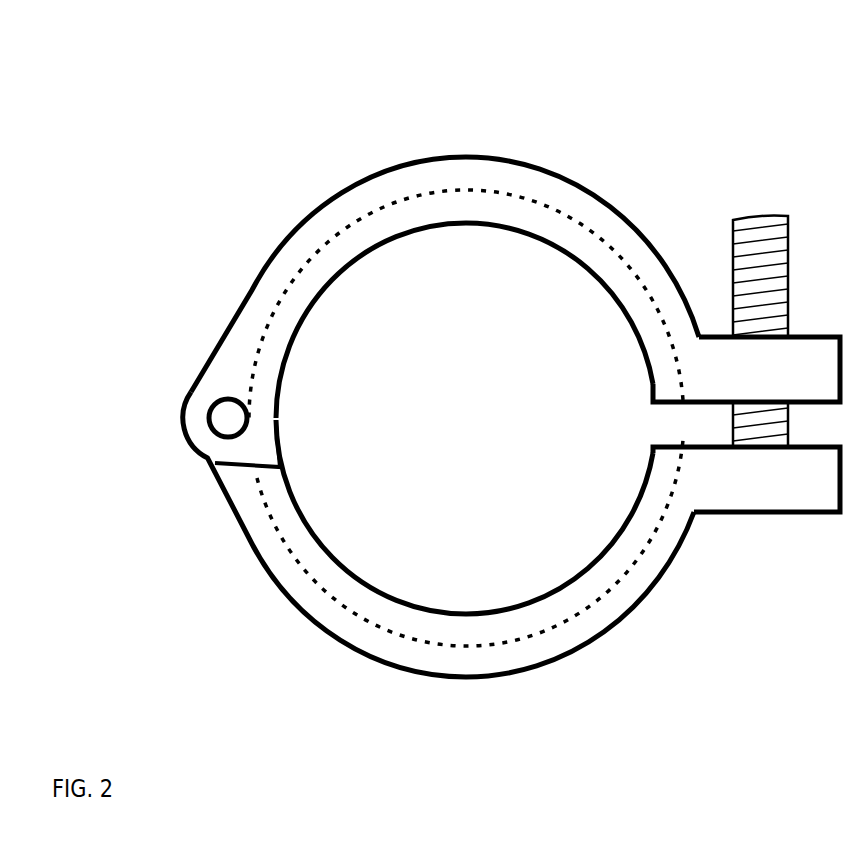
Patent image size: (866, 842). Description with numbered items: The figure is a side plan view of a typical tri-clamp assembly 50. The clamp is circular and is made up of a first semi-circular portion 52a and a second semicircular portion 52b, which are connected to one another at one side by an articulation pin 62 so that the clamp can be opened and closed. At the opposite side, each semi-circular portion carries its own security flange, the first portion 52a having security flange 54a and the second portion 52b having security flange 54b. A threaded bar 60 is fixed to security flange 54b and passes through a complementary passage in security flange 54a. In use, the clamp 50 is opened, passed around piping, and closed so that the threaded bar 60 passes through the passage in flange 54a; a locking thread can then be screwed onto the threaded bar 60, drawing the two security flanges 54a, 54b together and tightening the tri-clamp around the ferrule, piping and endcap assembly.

The tri-clamp assembly 50 is at (323, 117).
The first semi-circular portion 52a is at (273, 253).
The second semicircular portion 52b is at (612, 583).
The security flange 54a is at (781, 380).
The security flange 54b is at (781, 491).
The threaded bar 60 is at (763, 188).
The articulation pin 62 is at (222, 416).